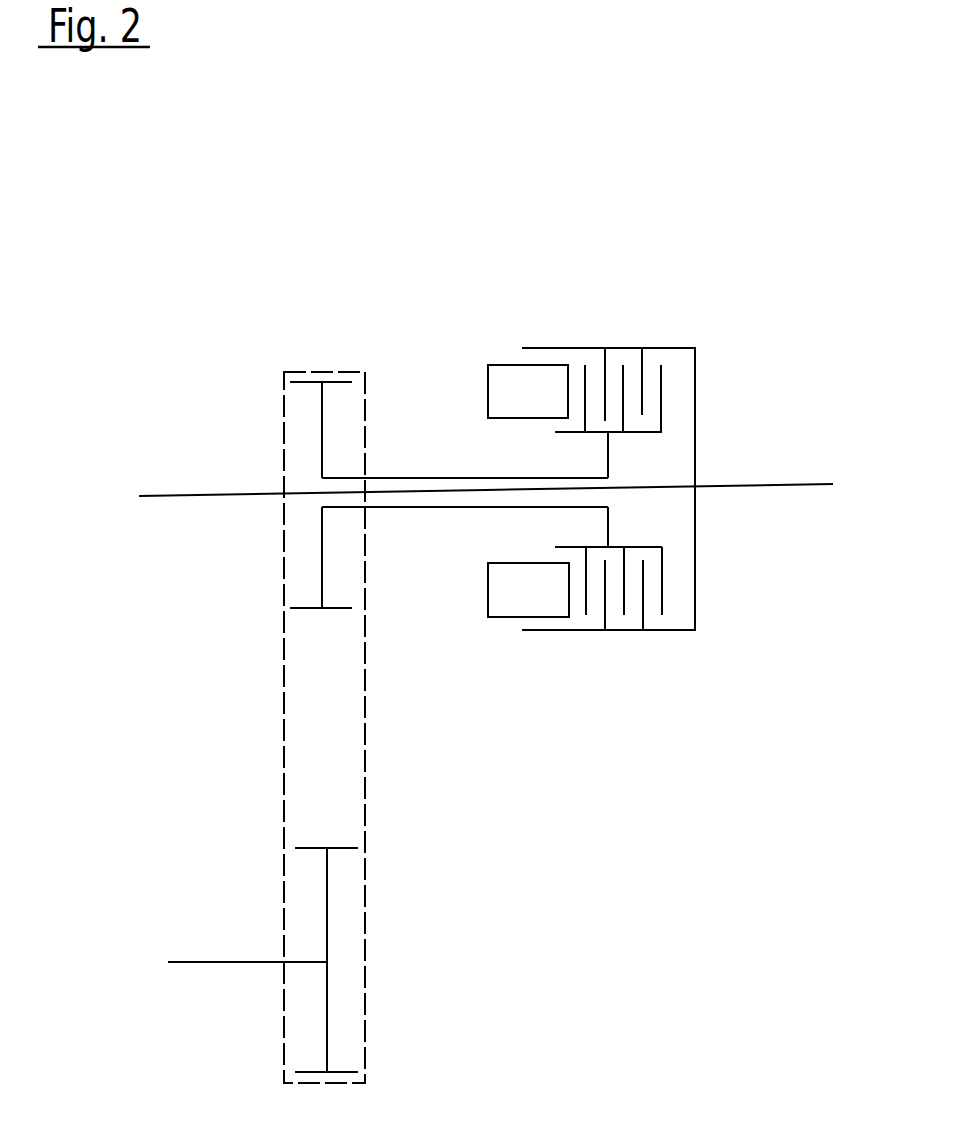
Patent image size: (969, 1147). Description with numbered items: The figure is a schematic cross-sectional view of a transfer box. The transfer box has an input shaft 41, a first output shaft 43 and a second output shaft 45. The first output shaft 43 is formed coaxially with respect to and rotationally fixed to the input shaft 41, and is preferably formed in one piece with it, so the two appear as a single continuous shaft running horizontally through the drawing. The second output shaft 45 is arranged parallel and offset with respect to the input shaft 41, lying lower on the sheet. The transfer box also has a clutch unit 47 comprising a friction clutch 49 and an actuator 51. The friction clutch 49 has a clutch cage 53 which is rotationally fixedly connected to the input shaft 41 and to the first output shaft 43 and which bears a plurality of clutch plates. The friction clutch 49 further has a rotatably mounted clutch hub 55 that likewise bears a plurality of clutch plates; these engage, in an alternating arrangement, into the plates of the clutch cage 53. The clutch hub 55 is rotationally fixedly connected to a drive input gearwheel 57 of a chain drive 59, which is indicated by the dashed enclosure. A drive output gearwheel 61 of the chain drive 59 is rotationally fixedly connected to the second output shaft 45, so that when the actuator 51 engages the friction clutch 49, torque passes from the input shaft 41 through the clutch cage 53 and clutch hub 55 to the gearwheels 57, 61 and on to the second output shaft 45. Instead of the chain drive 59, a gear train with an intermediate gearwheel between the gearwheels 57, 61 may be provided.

The input shaft 41 is at (173, 496).
The first output shaft 43 is at (807, 484).
The second output shaft 45 is at (198, 960).
The clutch unit 47 is at (584, 417).
The friction clutch 49 is at (628, 357).
The actuator 51 is at (482, 387).
The clutch cage 53 is at (675, 347).
The clutch hub 55 is at (643, 432).
The drive input gearwheel 57 is at (318, 412).
The chain drive 59 is at (285, 740).
The drive output gearwheel 61 is at (323, 1018).